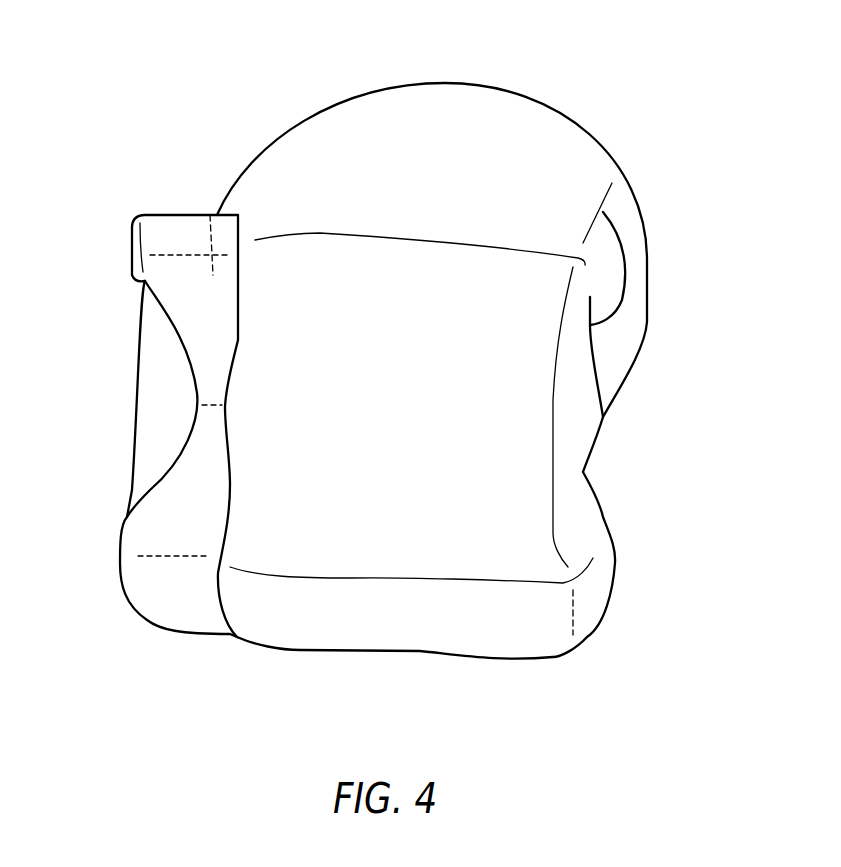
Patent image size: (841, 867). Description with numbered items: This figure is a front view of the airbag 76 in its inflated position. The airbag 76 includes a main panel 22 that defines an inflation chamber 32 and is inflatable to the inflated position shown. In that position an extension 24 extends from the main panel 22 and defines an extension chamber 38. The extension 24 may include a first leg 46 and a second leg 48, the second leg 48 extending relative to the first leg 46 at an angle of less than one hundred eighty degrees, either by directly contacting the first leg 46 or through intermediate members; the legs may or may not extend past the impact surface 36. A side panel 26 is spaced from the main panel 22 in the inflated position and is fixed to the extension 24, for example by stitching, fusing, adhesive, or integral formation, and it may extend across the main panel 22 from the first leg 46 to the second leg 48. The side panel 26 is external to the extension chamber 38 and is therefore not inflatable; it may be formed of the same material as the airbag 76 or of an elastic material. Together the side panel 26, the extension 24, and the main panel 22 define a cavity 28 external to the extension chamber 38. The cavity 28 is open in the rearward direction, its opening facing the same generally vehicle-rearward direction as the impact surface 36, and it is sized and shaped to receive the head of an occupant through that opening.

The airbag 76 is at (307, 100).
The main panel 22 is at (553, 162).
The extension 24 is at (130, 252).
The side panel 26 is at (138, 368).
The cavity 28 is at (207, 425).
The inflation chamber 32 is at (513, 313).
The impact surface 36 is at (423, 448).
The extension chamber 38 is at (210, 215).
The first leg 46 is at (177, 583).
The second leg 48 is at (170, 230).